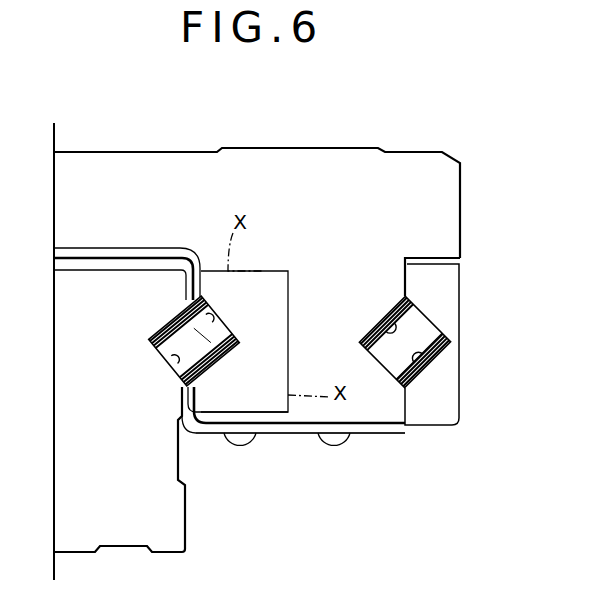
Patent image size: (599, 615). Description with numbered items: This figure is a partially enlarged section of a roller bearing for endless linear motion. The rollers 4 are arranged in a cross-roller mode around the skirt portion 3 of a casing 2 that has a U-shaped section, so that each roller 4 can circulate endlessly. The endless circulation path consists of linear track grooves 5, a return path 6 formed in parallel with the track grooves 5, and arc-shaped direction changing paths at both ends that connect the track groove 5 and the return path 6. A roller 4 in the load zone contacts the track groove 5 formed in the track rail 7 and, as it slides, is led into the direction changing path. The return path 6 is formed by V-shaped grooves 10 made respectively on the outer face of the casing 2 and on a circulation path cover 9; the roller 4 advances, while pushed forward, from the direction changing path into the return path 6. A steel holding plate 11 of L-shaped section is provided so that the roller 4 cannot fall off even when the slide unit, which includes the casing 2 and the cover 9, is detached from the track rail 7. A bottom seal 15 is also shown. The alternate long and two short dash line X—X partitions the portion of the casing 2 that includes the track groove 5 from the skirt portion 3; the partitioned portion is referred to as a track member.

The casing 2 is at (122, 152).
The skirt portion 3 is at (354, 240).
The roller 4 is at (178, 320).
The track groove 5 is at (215, 320).
The return path 6 is at (444, 362).
The track rail 7 is at (95, 452).
The circulation path cover 9 is at (462, 264).
The V-shaped groove 10 is at (388, 325).
The holding plate 11 is at (157, 256).
The bottom seal 15 is at (386, 436).